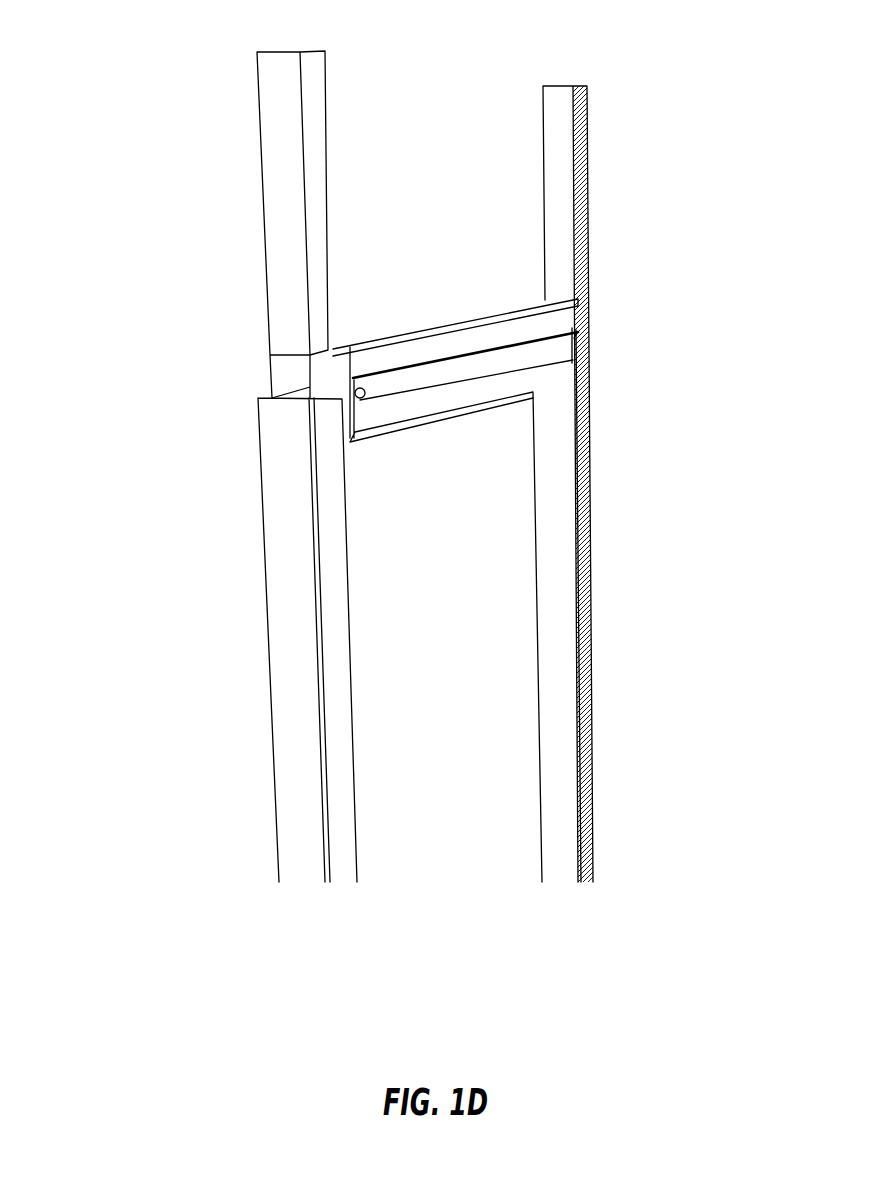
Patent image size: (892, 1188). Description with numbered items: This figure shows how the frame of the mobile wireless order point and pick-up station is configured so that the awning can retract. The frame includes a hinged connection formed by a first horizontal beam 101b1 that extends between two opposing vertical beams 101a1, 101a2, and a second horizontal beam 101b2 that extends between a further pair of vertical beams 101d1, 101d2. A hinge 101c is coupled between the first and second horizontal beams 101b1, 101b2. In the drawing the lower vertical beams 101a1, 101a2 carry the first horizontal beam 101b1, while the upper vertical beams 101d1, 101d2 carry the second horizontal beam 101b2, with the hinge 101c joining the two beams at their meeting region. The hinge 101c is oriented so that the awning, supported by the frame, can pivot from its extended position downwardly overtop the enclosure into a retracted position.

The vertical beam 101d2 is at (262, 167).
The vertical beam 101d1 is at (590, 170).
The vertical beam 101a2 is at (264, 562).
The vertical beam 101a1 is at (597, 526).
The hinge 101c is at (583, 302).
The second horizontal beam 101b2 is at (465, 302).
The first horizontal beam 101b1 is at (487, 406).